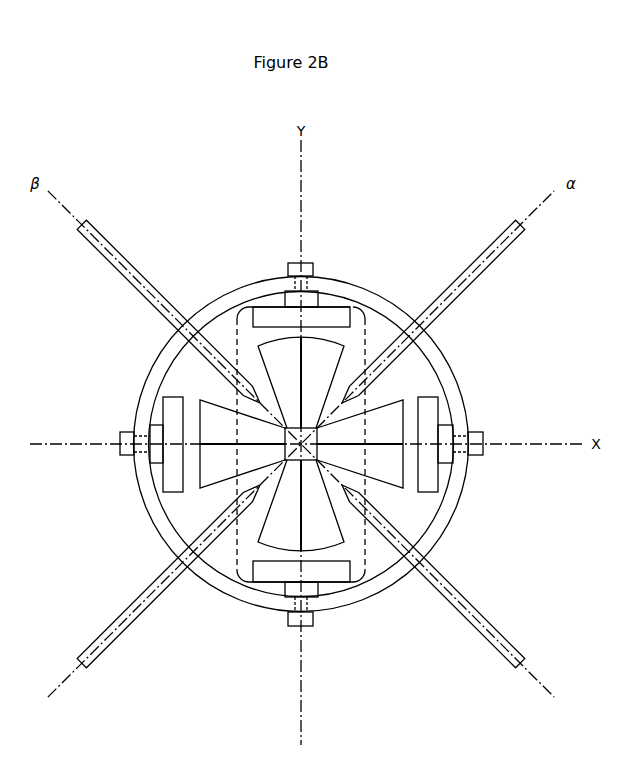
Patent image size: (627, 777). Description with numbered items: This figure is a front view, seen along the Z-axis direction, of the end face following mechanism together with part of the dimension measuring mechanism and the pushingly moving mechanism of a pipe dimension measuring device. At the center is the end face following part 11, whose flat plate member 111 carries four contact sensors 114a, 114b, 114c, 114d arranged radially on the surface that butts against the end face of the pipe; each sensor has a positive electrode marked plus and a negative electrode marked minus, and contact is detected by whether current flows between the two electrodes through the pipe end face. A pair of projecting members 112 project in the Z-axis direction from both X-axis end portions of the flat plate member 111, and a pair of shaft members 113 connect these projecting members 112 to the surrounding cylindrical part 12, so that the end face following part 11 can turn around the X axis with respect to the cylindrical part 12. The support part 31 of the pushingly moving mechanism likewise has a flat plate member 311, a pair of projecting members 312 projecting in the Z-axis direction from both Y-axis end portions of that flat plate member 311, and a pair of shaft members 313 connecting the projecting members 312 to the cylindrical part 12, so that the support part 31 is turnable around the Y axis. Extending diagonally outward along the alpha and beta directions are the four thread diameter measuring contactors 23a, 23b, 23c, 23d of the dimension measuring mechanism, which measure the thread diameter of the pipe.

The end face following part 11 is at (412, 388).
The flat plate member 111 is at (195, 497).
The projecting members 112 is at (173, 414).
The shaft members 113 is at (118, 452).
The contact sensor 114a is at (280, 344).
The contact sensor 114b is at (392, 482).
The contact sensor 114c is at (281, 536).
The contact sensor 114d is at (204, 410).
The cylindrical part 12 is at (372, 300).
The thread diameter measuring contactor 23a is at (492, 247).
The thread diameter measuring contactor 23b is at (492, 645).
The thread diameter measuring contactor 23c is at (108, 650).
The thread diameter measuring contactor 23d is at (112, 248).
The support part 31 is at (388, 583).
The flat plate member 311 is at (250, 555).
The projecting members 312 is at (324, 315).
The shaft members 313 is at (308, 262).